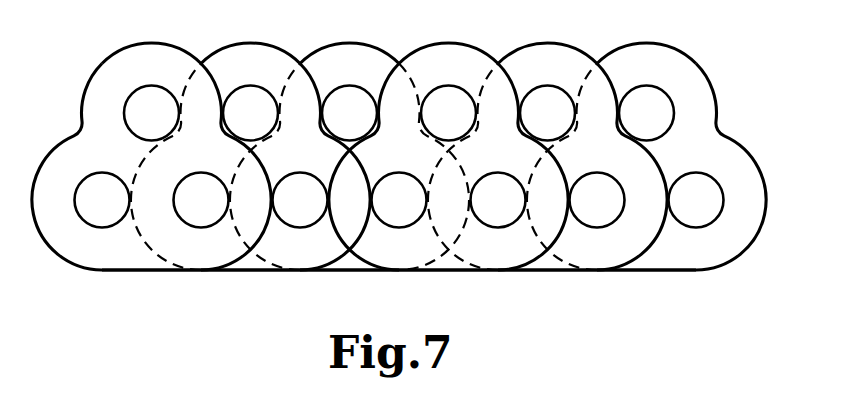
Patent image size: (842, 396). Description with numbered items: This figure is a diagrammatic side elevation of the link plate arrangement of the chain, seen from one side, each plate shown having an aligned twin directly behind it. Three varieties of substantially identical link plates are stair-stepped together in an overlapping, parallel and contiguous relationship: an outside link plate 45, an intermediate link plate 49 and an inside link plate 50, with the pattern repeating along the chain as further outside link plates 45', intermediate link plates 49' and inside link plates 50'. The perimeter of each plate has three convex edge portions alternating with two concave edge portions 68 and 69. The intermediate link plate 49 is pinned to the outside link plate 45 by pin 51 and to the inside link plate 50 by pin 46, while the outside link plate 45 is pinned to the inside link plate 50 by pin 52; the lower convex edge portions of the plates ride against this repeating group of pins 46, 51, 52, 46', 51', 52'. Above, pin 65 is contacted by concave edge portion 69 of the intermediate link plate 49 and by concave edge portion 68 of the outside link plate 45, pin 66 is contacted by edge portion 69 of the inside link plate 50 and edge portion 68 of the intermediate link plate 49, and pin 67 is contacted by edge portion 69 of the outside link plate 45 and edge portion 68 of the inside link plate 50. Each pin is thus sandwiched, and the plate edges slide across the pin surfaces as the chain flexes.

The outside link plate 45 is at (133, 245).
The pin 46 is at (298, 219).
The intermediate link plate 49 is at (272, 257).
The inside link plate 50 is at (348, 54).
The inside link plate 50' is at (681, 156).
The pin 51 is at (197, 215).
The pin 51' is at (497, 239).
The pin 52 is at (397, 219).
The pin 52' is at (731, 211).
The outside link plate 45' is at (454, 184).
The pin 46' is at (601, 239).
The intermediate link plate 49' is at (562, 184).
The pin 65 is at (355, 101).
The pin 66 is at (455, 97).
The pin 67 is at (548, 97).
The concave edge portion 68 is at (372, 98).
The concave edge portion 69 is at (331, 122).